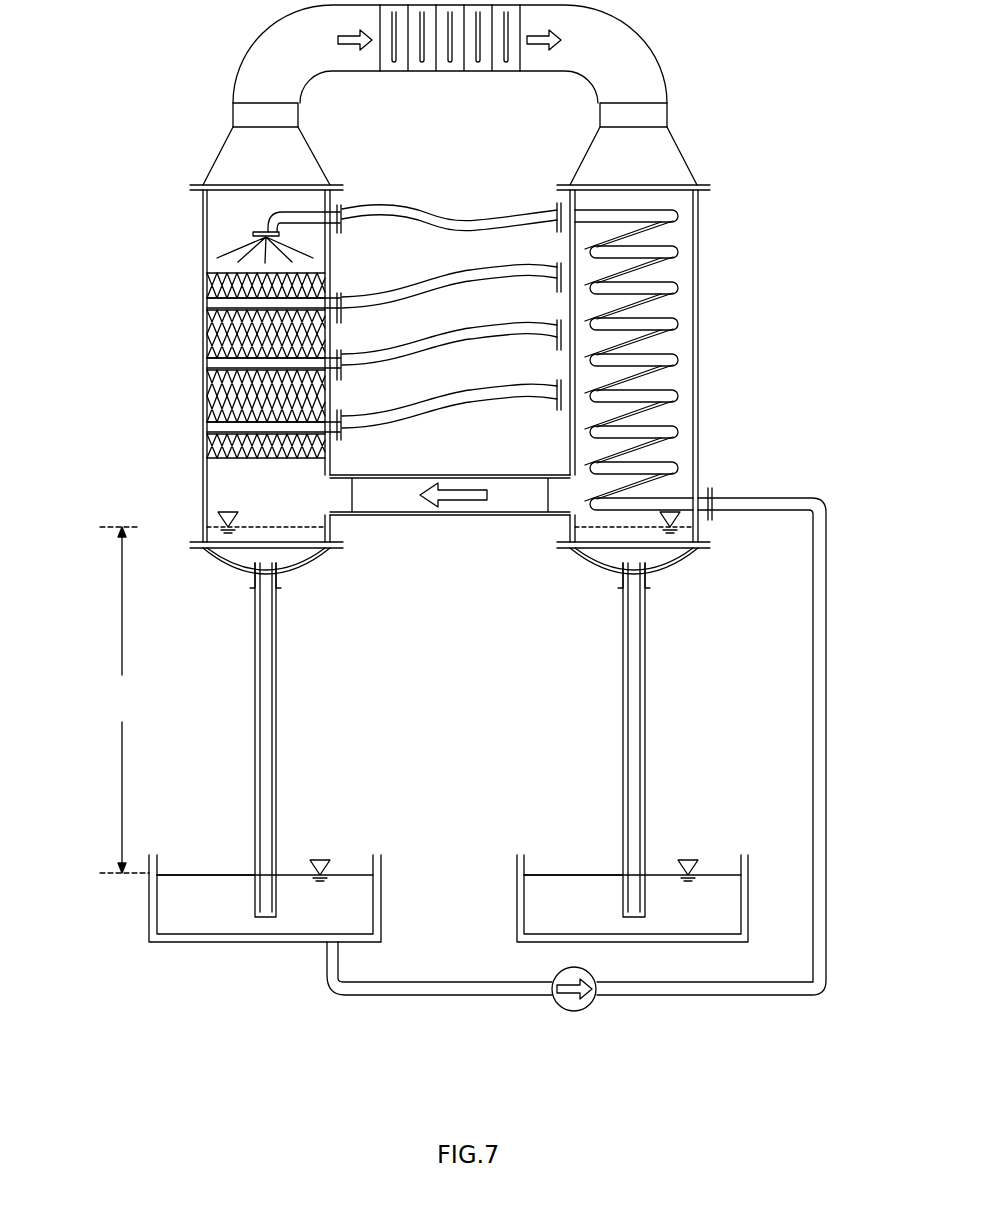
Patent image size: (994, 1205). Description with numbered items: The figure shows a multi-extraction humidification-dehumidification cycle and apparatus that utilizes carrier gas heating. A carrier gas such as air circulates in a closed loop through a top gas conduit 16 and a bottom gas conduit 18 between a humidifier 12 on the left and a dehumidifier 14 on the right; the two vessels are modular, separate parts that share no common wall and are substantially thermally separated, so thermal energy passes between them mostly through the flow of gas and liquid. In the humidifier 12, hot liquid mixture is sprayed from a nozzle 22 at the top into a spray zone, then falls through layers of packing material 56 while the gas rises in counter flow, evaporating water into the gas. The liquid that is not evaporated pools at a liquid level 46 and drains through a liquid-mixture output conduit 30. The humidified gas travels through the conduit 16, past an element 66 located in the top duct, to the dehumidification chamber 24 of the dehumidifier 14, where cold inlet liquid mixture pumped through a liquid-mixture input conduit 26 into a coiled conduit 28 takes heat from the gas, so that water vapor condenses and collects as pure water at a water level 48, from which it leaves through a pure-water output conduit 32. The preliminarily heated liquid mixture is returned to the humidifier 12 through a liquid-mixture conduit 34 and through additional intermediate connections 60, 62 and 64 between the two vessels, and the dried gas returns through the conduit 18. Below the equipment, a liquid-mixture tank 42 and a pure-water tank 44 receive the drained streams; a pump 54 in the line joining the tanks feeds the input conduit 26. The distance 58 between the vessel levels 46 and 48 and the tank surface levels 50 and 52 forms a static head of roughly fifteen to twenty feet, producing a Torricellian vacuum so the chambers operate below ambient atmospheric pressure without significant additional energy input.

The humidifier 12 is at (153, 413).
The dehumidifier 14 is at (730, 415).
The gas conduit 16 is at (305, 67).
The gas conduit 18 is at (540, 507).
The nozzle 22 is at (245, 232).
The dehumidification chamber 24 is at (683, 232).
The liquid-mixture input conduit 26 is at (828, 655).
The coiled conduit 28 is at (683, 358).
The liquid-mixture output conduit 30 is at (278, 705).
The pure-water output conduit 32 is at (647, 705).
The liquid-mixture conduit 34 is at (420, 210).
The liquid-mixture tank 42 is at (342, 892).
The pure-water tank 44 is at (710, 892).
The liquid level 46 is at (290, 520).
The water level 48 is at (598, 522).
The liquid level 50 is at (225, 873).
The water level 52 is at (560, 873).
The pump 54 is at (590, 1005).
The packing material 56 is at (203, 336).
The distance 58 is at (124, 700).
The first intermediate pipe 60 is at (400, 296).
The second intermediate pipe 62 is at (418, 353).
The third intermediate pipe 64 is at (418, 416).
The fan / grille 66 is at (428, 74).